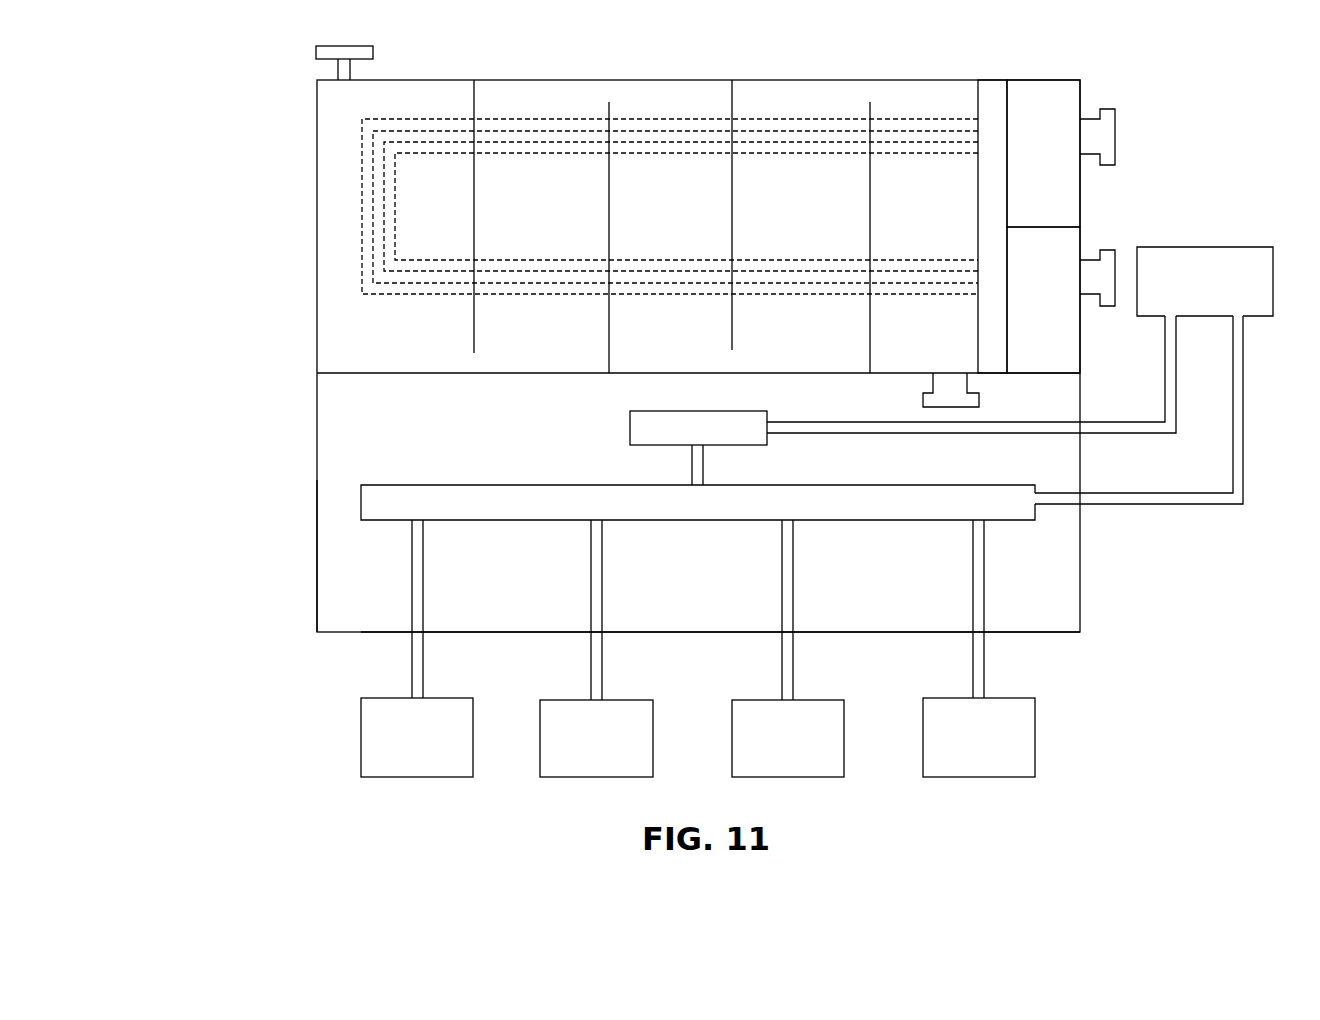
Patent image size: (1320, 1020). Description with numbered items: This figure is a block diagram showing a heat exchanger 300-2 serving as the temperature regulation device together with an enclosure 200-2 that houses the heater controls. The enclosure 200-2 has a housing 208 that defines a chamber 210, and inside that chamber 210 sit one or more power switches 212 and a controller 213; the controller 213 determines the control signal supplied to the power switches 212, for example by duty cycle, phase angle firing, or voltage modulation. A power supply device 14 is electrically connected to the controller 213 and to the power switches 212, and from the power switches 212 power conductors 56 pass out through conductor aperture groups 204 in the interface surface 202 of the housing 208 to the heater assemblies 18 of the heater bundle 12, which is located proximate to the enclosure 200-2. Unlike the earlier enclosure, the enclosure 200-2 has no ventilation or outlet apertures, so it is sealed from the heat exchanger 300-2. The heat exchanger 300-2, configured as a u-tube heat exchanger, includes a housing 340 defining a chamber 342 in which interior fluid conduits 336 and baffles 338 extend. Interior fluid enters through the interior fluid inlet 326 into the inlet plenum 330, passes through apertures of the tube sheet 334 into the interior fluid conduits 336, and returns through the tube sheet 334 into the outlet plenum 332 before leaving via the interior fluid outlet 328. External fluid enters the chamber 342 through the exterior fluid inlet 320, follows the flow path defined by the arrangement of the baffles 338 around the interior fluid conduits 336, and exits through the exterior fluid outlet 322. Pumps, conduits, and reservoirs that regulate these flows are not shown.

The heater bundle 12 is at (318, 755).
The power supply device 14 is at (1207, 247).
The heater assembly 18 is at (361, 708).
The power conductor 56 is at (423, 677).
The enclosure 200-2 is at (286, 528).
The interface surface 202 is at (530, 633).
The conductor aperture group 204 is at (398, 643).
The housing 208 is at (316, 548).
The chamber 210 is at (1052, 574).
The power switches 212 is at (1036, 488).
The controller 213 is at (630, 427).
The heat exchanger 300-2 is at (257, 164).
The exterior fluid inlet 320 is at (316, 48).
The exterior fluid outlet 322 is at (979, 397).
The interior fluid inlet 326 is at (1115, 109).
The interior fluid outlet 328 is at (1105, 306).
The inlet plenum 330 is at (1039, 96).
The outlet plenum 332 is at (1058, 248).
The tube sheet 334 is at (990, 92).
The interior fluid conduit 336 is at (794, 119).
The baffle 338 is at (474, 105).
The housing 340 is at (625, 81).
The chamber 342 is at (663, 96).